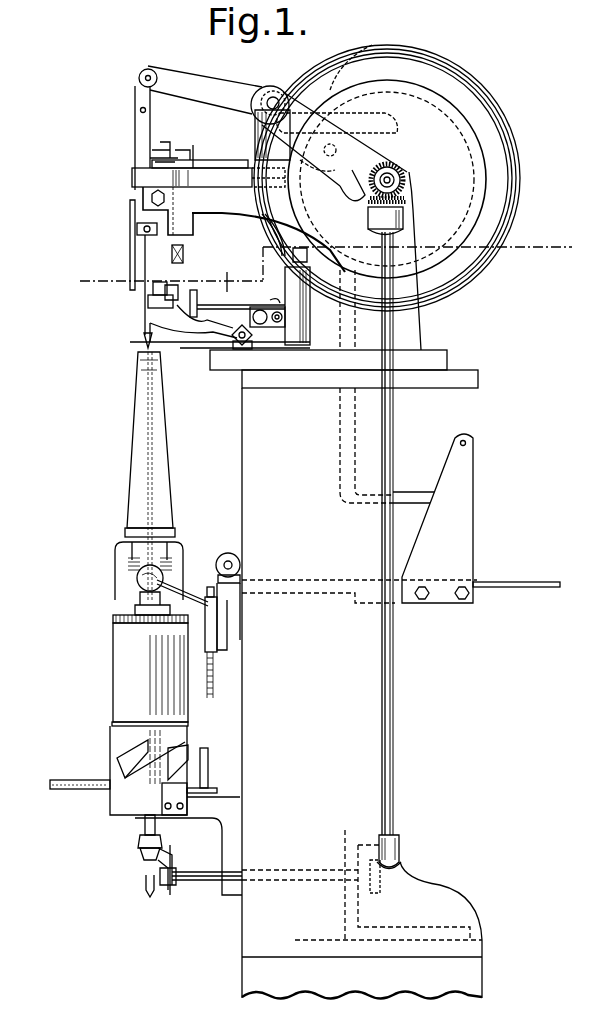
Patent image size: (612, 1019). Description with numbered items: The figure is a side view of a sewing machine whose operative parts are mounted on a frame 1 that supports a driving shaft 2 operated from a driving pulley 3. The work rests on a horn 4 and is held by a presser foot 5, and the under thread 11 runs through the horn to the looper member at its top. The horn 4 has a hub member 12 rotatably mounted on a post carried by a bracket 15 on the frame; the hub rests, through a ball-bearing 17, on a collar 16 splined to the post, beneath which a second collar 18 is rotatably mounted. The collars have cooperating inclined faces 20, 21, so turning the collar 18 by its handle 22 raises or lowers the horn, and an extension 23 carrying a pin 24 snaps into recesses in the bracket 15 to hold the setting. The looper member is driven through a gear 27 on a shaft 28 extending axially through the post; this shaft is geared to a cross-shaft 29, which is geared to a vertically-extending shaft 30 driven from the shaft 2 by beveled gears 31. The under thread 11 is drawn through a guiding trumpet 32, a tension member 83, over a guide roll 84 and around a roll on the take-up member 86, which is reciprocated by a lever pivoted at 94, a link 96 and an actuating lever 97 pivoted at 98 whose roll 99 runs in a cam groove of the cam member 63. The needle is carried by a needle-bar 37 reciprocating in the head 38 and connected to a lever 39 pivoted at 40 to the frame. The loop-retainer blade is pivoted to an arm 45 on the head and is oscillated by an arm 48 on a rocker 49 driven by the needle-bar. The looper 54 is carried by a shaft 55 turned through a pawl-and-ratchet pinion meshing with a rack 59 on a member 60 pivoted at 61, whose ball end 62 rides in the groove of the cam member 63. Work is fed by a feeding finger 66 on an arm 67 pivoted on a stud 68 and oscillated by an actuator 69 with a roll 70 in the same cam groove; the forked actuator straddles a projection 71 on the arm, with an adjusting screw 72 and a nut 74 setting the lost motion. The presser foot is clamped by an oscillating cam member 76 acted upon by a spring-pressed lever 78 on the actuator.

The frame 1 is at (366, 697).
The driving shaft 2 is at (396, 178).
The driving pulley 3 is at (521, 203).
The horn 4 is at (140, 365).
The presser foot 5 is at (165, 345).
The under thread 11 is at (203, 588).
The hub member 12 is at (122, 650).
The bracket 15 is at (213, 815).
The collar 16 is at (116, 738).
The ball-bearing 17 is at (112, 723).
The second collar 18 is at (130, 797).
The inclined face 20 is at (186, 745).
The inclined face 21 is at (120, 772).
The handle 22 is at (55, 787).
The extension 23 is at (208, 786).
The pin 24 is at (217, 792).
The gear 27 is at (118, 613).
The shaft 28 is at (143, 840).
The cross-shaft 29 is at (212, 885).
The vertically-extending shaft 30 is at (395, 759).
The beveled gears 31 is at (400, 197).
The guiding trumpet 32 is at (136, 578).
The needle-bar 37 is at (136, 135).
The head 38 is at (134, 186).
The lever 39 is at (238, 92).
The pivot 40 is at (274, 100).
The arm 45 is at (148, 296).
The arm 48 is at (132, 272).
The rocker 49 is at (137, 228).
The looper 54 is at (176, 300).
The shaft 55 is at (183, 262).
The rack 59 is at (150, 165).
The member 60 is at (208, 160).
The pivot 61 is at (250, 213).
The ball end 62 is at (317, 172).
The cam member 63 is at (358, 85).
The feeding finger 66 is at (144, 343).
The arm 67 is at (176, 332).
The stud 68 is at (280, 256).
The actuator 69 is at (332, 340).
The roll 70 is at (406, 214).
The projection 71 is at (233, 318).
The adjusting screw 72 is at (256, 342).
The nut 74 is at (294, 304).
The cam member 76 is at (198, 305).
The lever 78 is at (228, 298).
The tension member 83 is at (212, 587).
The guide roll 84 is at (240, 562).
The take-up member 86 is at (510, 582).
The pivot 94 is at (467, 444).
The link 96 is at (405, 492).
The actuating lever 97 is at (360, 440).
The pivot 98 is at (360, 338).
The roll 99 is at (393, 146).